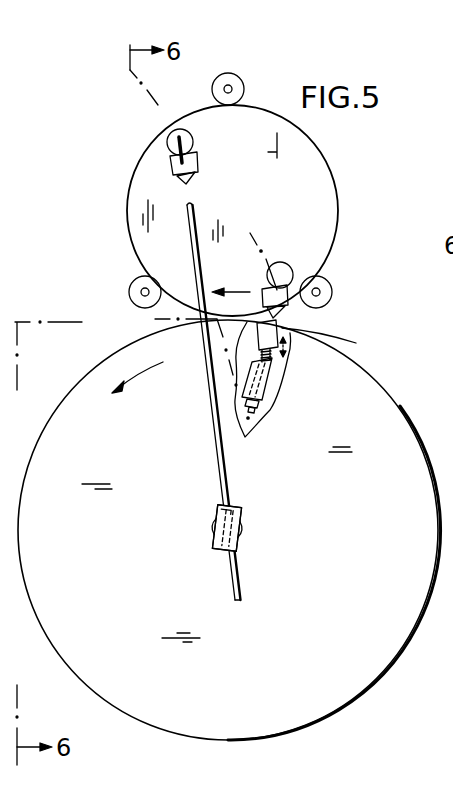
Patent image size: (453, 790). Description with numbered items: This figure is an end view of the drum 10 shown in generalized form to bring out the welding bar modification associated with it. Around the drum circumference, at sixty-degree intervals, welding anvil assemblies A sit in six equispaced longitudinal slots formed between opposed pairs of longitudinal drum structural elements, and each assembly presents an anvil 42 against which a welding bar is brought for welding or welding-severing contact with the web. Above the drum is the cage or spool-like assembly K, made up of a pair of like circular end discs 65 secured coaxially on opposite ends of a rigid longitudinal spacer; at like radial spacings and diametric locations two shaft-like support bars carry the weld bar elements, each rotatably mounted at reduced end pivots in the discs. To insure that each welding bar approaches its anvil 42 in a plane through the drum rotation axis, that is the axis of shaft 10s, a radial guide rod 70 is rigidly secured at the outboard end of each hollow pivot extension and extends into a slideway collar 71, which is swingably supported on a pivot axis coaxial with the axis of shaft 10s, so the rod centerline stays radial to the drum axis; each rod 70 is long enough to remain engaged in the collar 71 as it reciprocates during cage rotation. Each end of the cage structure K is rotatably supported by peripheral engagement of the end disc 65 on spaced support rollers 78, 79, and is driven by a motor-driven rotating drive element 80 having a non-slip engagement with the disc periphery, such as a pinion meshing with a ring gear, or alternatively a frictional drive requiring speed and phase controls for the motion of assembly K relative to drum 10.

The drum 10 is at (72, 381).
The shaft 10s is at (241, 524).
The circular end disc 65 is at (313, 204).
The anvil 42 is at (335, 342).
The radial guide rod 70 is at (216, 442).
The slideway collar 71 is at (240, 547).
The support roller 78 is at (129, 298).
The support roller 79 is at (333, 292).
The rotating drive element 80 is at (244, 90).
The welding anvil assembly A is at (292, 367).
The cage assembly K is at (362, 191).